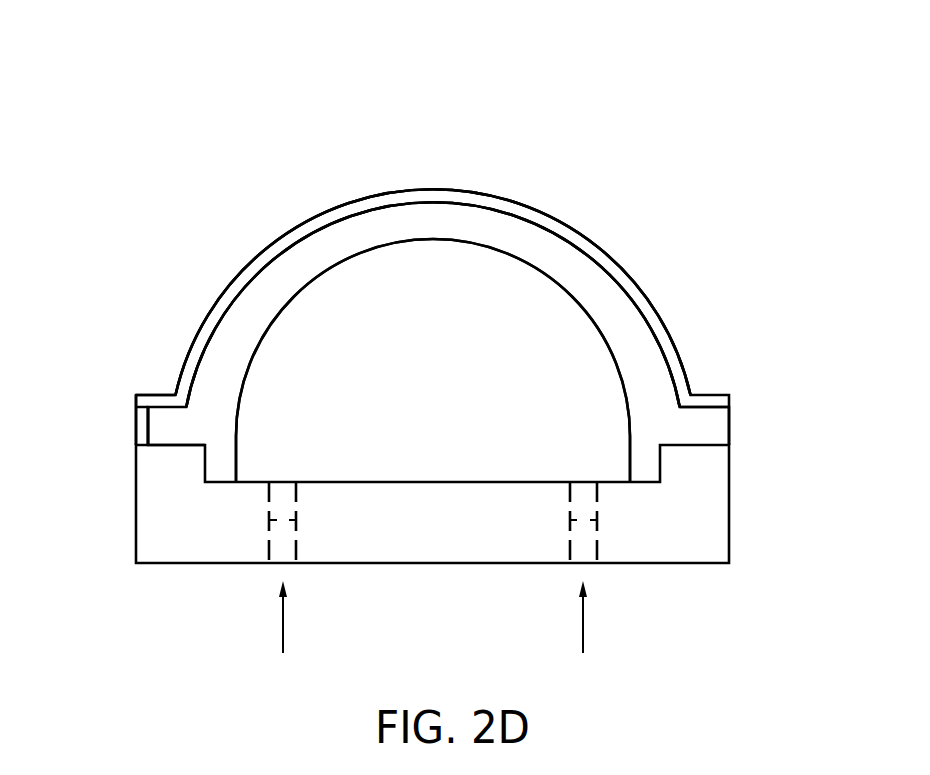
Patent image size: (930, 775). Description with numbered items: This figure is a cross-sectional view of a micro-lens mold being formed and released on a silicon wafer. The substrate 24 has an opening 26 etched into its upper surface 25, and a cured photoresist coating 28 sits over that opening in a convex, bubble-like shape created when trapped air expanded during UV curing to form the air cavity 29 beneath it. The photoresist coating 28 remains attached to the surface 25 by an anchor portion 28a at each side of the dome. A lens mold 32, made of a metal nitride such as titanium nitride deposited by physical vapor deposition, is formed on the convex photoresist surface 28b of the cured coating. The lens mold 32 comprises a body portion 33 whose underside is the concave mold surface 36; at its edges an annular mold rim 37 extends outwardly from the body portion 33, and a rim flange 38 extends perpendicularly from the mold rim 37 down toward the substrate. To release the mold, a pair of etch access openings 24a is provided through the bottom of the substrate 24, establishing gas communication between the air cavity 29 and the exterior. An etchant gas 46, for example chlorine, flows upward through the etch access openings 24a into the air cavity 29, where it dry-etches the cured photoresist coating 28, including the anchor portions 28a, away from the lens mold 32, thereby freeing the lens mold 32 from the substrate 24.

The substrate 24 is at (713, 510).
The etch access openings 24a is at (296, 520).
The surface 25 is at (172, 442).
The opening 26 is at (560, 482).
The photoresist coating 28 is at (590, 270).
The anchor portion 28a is at (160, 432).
The convex photoresist surface 28b is at (528, 218).
The air cavity 29 is at (300, 348).
The lens mold 32 is at (486, 188).
The body portion 33 is at (293, 224).
The concave mold surface 36 is at (430, 202).
The annular mold rim 37 is at (140, 400).
The rim flange 38 is at (140, 423).
The etchant gas 46 is at (283, 630).